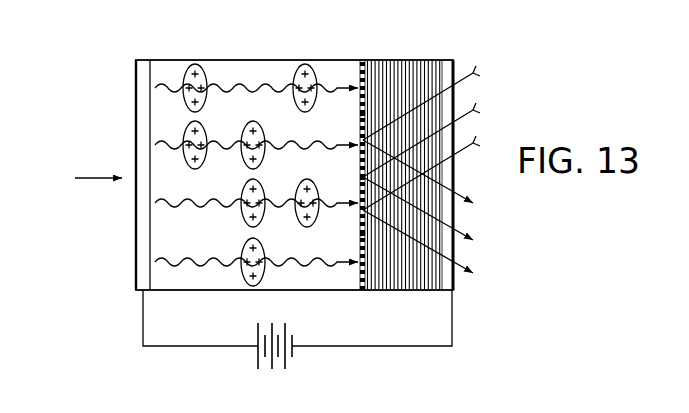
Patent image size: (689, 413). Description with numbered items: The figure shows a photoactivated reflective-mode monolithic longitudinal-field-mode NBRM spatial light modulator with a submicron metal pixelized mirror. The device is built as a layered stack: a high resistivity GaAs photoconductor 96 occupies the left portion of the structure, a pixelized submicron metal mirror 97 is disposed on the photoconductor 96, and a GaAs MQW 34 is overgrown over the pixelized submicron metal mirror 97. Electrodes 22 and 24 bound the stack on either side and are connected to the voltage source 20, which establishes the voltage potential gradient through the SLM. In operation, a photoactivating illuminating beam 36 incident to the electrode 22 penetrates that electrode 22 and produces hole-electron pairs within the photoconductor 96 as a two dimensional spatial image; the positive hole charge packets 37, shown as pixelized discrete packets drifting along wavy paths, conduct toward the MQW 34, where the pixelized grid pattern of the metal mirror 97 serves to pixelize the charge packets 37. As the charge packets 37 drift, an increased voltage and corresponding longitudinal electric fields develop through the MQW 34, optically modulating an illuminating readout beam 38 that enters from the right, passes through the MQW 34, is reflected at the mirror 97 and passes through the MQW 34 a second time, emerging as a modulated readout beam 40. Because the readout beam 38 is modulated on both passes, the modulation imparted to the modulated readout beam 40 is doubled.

The voltage source 20 is at (258, 362).
The electrode 22 is at (139, 60).
The electrode 24 is at (447, 60).
The MQW 34 is at (412, 60).
The photoactivating illuminating beam 36 is at (94, 178).
The charge packets 37 is at (297, 73).
The illuminating readout beam 38 is at (466, 117).
The modulated readout beam 40 is at (468, 236).
The photoconductor 96 is at (228, 60).
The pixelized submicron metal mirror 97 is at (360, 60).